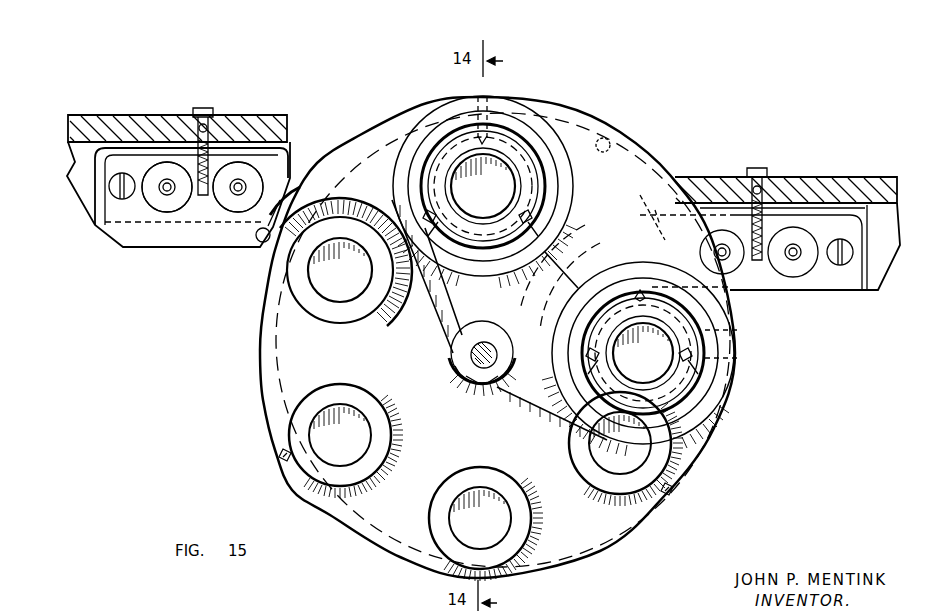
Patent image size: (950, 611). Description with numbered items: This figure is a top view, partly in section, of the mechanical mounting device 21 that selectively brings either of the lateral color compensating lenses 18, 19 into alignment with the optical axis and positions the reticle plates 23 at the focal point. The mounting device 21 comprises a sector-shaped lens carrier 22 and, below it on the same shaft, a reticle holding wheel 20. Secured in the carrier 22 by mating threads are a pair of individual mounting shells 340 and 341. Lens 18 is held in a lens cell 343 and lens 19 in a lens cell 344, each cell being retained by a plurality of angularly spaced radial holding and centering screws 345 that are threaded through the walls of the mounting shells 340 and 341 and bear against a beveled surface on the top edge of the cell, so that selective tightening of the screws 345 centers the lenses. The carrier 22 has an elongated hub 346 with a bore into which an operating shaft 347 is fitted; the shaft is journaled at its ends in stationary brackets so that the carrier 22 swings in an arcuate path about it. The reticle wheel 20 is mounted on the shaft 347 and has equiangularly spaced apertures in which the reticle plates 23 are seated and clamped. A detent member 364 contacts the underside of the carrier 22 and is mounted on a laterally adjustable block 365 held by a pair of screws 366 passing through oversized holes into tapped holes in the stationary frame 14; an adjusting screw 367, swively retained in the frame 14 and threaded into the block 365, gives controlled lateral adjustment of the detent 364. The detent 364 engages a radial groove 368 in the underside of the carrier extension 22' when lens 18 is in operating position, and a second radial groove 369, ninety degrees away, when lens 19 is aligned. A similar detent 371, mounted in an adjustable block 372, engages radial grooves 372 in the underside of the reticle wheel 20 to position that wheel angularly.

The frame 14 is at (277, 118).
The lateral color compensating lens 18 is at (481, 193).
The lateral color compensating lens 19 is at (634, 361).
The reticle holding wheel 20 is at (445, 428).
The mechanical mounting device 21 is at (246, 370).
The sector-shaped lens carrier 22 is at (563, 270).
The carrier extension 22' is at (503, 340).
The reticle plates 23 is at (331, 278).
The mounting shell 340 is at (513, 130).
The mounting shell 341 is at (685, 412).
The lens cell 343 is at (513, 152).
The lens cell 344 is at (693, 362).
The radial holding and centering screws 345 is at (523, 215).
The elongated hub 346 is at (480, 336).
The operating shaft 347 is at (470, 352).
The detent member 364 is at (262, 242).
The laterally adjustable block 365 is at (226, 243).
The screws 366 is at (237, 194).
The adjusting screw 367 is at (203, 108).
The radial groove 368 is at (275, 222).
The radial groove 369 is at (610, 142).
The detent 371 is at (648, 207).
The adjustable block 372 is at (283, 455).